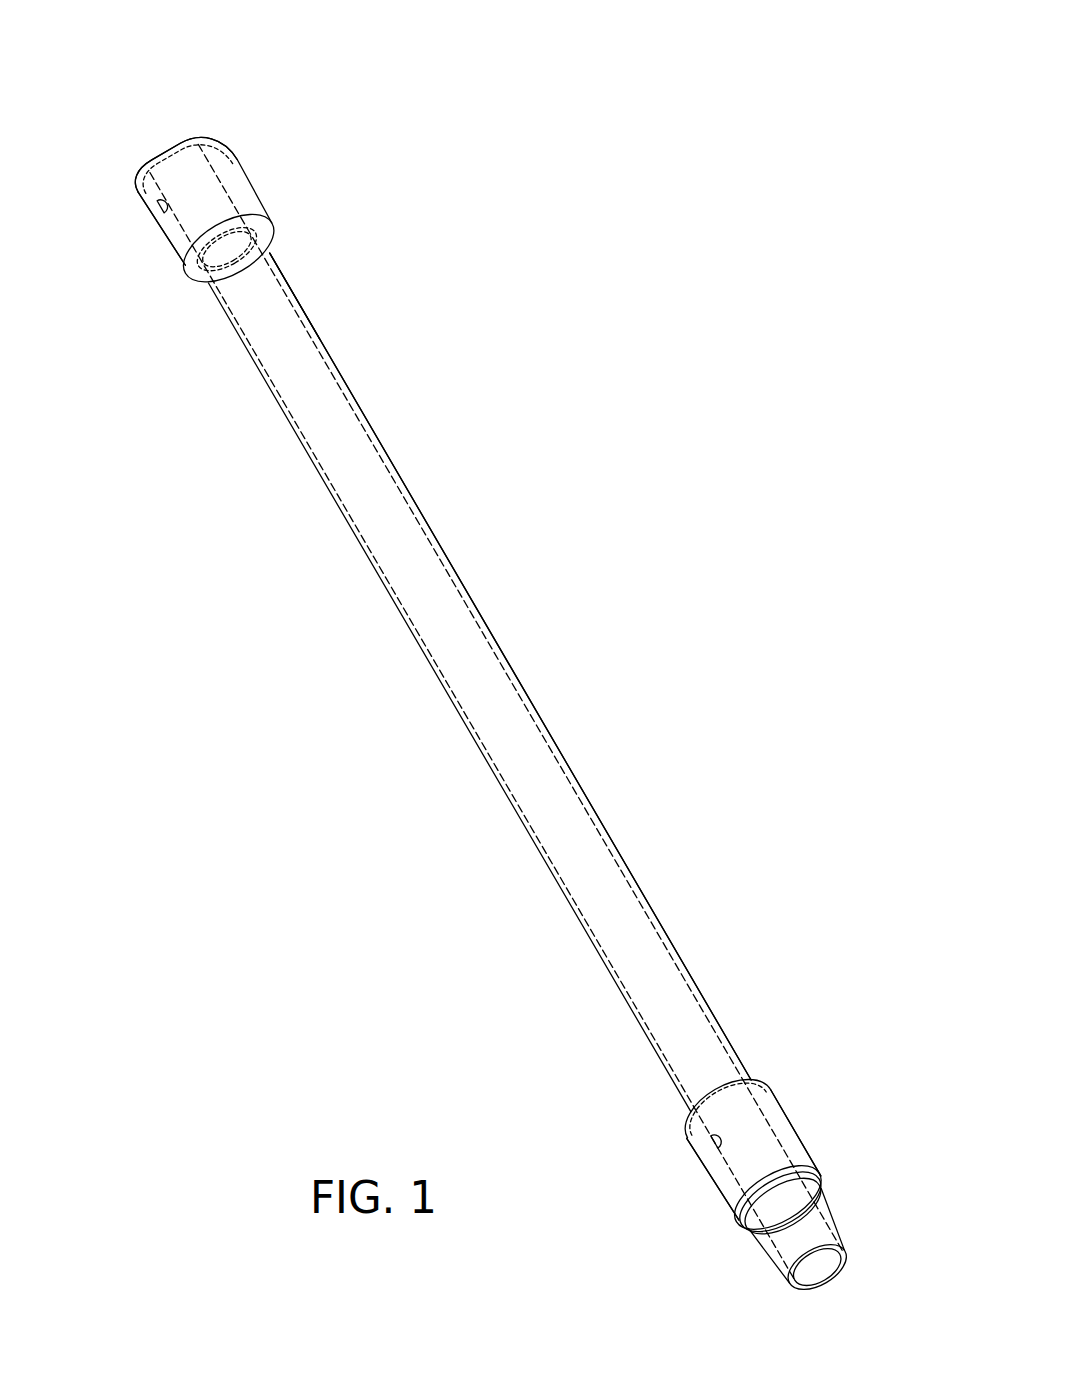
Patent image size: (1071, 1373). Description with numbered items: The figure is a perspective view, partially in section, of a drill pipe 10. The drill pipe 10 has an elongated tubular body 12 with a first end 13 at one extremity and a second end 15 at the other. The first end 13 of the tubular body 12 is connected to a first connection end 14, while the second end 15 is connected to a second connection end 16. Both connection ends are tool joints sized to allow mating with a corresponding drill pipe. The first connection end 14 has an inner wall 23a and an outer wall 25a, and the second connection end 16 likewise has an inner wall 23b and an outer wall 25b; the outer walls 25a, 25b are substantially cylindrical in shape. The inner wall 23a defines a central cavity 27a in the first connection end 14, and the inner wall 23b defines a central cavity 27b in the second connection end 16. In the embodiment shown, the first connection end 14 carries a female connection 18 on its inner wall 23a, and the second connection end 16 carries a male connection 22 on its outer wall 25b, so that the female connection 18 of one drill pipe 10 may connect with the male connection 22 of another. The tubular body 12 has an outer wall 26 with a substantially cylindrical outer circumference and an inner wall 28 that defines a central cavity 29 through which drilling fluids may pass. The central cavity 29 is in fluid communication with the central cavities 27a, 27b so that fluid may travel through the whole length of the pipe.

The drill pipe 10 is at (555, 66).
The tubular body 12 is at (518, 681).
The first end 13 is at (284, 271).
The first connection end 14 is at (257, 195).
The second end 15 is at (717, 1083).
The second connection end 16 is at (715, 1185).
The female connection 18 is at (210, 168).
The male connection 22 is at (763, 1247).
The inner wall 23a is at (170, 195).
The inner wall 23b is at (720, 1137).
The outer wall 25a is at (165, 242).
The outer wall 25b is at (797, 1133).
The outer wall 26 is at (440, 548).
The central cavity 27a is at (203, 190).
The central cavity 27b is at (758, 1162).
The inner wall 28 is at (507, 800).
The central cavity 29 is at (516, 748).